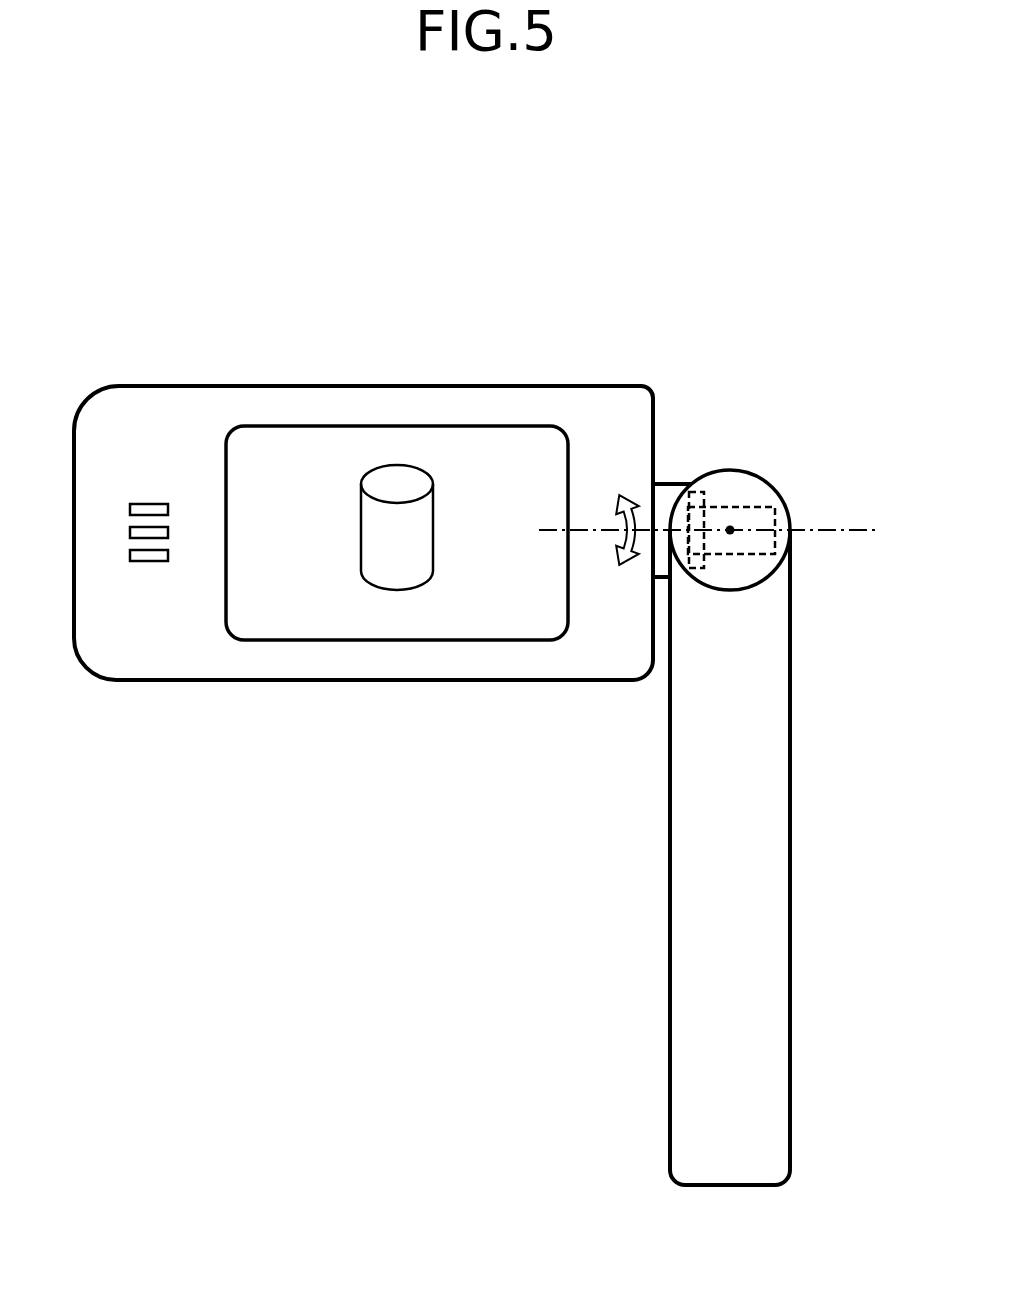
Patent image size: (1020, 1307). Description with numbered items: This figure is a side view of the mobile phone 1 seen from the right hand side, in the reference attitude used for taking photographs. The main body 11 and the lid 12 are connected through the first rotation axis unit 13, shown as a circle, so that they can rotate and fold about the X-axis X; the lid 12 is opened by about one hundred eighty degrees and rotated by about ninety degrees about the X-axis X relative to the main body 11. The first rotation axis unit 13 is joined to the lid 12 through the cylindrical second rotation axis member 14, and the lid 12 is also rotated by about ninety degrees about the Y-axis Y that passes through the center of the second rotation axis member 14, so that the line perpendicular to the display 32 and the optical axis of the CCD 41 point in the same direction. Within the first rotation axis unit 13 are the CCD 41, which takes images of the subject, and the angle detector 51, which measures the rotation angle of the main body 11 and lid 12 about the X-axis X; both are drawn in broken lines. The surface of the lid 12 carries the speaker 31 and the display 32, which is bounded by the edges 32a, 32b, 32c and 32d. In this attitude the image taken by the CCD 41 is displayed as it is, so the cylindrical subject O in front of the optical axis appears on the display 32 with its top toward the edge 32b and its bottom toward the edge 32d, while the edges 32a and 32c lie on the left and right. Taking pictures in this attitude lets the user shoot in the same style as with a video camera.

The mobile phone 1 is at (322, 1032).
The main body 11 is at (668, 866).
The lid 12 is at (373, 386).
The first rotation axis unit 13 is at (755, 575).
The second rotation axis member 14 is at (670, 493).
The speaker 31 is at (150, 503).
The display 32 is at (379, 543).
The edge of the display 32a is at (223, 483).
The edge of the display 32b is at (326, 426).
The edge of the display 32c is at (570, 588).
The edge of the display 32d is at (250, 640).
The CCD 41 is at (782, 538).
The angle detector 51 is at (710, 497).
The subject O is at (402, 478).
The X-axis X is at (730, 530).
The Y-axis Y is at (833, 530).